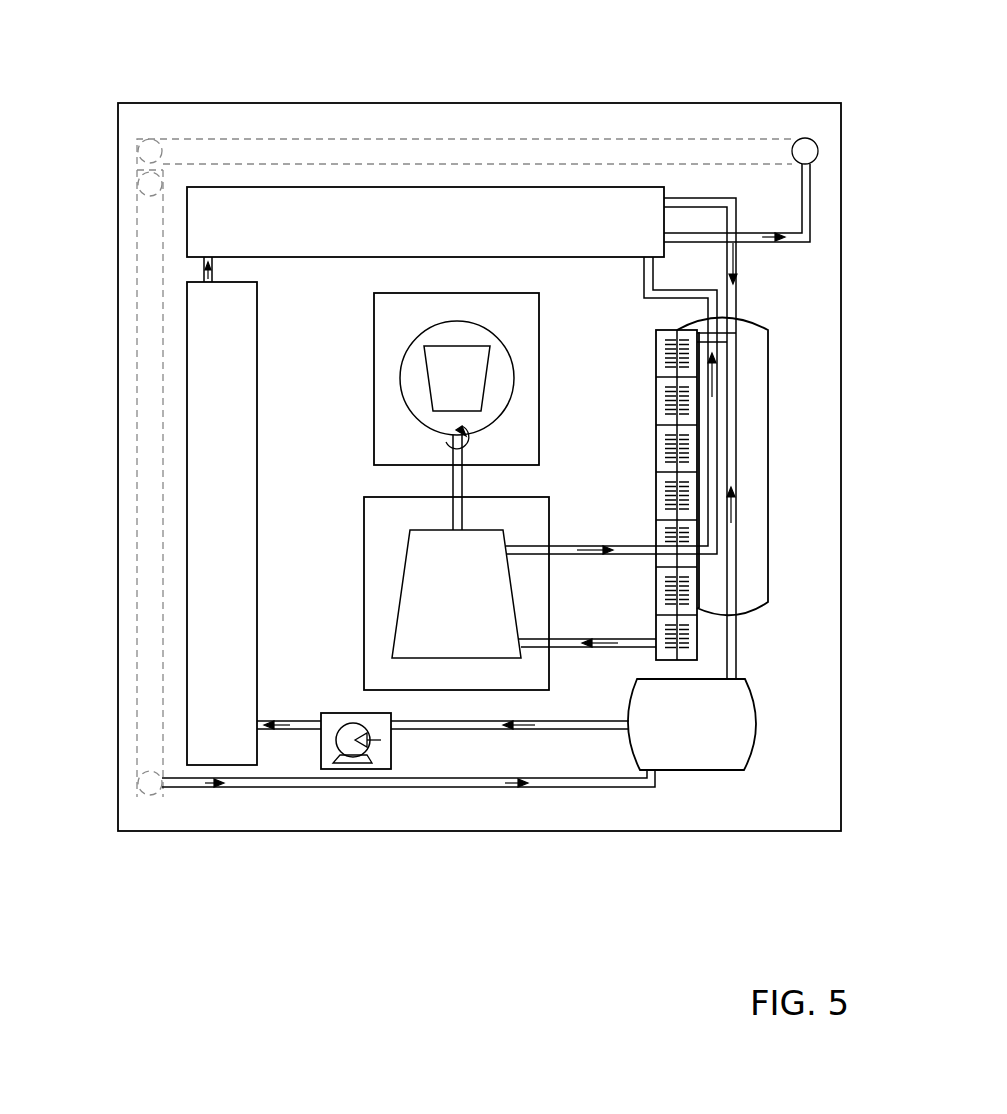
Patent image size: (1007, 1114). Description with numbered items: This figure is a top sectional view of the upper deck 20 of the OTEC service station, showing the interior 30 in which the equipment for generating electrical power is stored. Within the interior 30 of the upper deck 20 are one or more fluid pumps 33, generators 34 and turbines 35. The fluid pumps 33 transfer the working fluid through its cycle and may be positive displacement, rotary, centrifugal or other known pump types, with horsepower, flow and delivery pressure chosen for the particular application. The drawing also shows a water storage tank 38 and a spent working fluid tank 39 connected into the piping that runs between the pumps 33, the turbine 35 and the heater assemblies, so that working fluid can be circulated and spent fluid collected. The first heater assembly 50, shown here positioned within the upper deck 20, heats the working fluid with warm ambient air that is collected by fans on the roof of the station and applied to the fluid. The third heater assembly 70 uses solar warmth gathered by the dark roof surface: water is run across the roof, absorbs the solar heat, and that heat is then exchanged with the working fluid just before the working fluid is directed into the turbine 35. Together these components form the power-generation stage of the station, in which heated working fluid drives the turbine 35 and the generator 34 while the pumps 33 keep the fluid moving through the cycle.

The upper deck 20 is at (606, 842).
The interior 30 is at (782, 752).
The fluid pump 33 is at (352, 768).
The generator 34 is at (387, 328).
The turbine 35 is at (387, 545).
The water storage tank 38 is at (768, 563).
The spent working fluid tank 39 is at (685, 770).
The first heater assembly 50 is at (447, 217).
The third heater assembly 70 is at (660, 387).